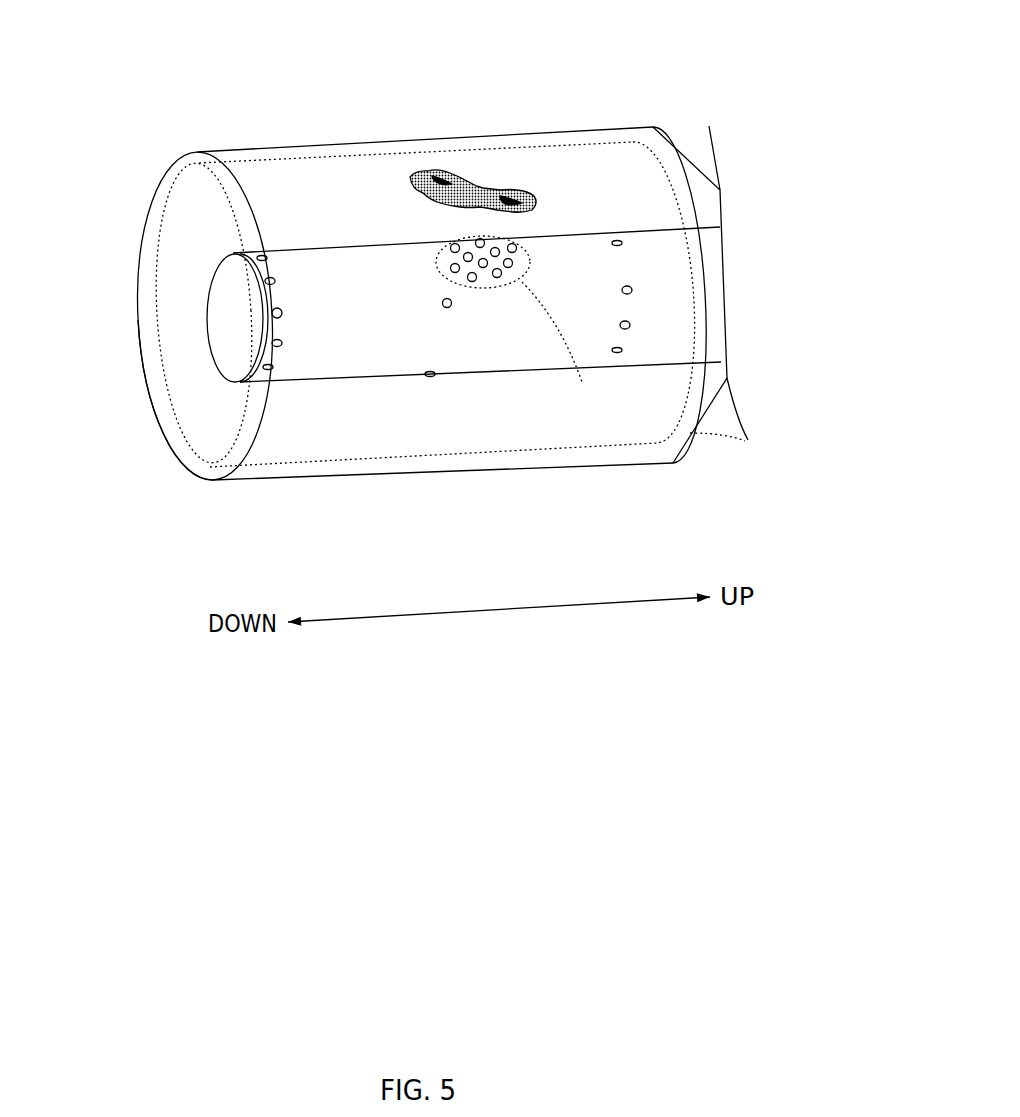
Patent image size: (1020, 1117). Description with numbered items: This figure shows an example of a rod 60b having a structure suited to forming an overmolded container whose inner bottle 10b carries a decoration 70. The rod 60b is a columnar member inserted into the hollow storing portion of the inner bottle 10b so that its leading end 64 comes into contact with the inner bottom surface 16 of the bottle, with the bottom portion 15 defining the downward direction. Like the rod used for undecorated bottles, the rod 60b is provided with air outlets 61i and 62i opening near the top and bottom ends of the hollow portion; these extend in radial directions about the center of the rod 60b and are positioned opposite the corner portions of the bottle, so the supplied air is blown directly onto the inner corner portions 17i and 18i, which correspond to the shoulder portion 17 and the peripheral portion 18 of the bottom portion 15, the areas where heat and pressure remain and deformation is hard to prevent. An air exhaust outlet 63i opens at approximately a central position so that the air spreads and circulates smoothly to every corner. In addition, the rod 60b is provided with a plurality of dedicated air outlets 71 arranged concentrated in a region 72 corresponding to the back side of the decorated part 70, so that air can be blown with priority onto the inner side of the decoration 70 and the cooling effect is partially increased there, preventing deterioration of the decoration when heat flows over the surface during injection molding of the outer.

The inner bottle 10b is at (592, 410).
The bottom portion 15 is at (182, 384).
The inner bottom surface 16 is at (236, 419).
The shoulder portion 17 is at (702, 172).
The corner portion 17i is at (745, 441).
The peripheral portion of bottom portion 18 is at (138, 237).
The corner portion 18i is at (170, 444).
The rod 60b is at (358, 349).
The air outlet 61i is at (618, 242).
The air outlet 62i is at (262, 255).
The air exhaust outlet 63i is at (430, 380).
The leading end 64 is at (220, 330).
The decoration 70 is at (470, 187).
The air outlets 71 is at (452, 248).
The region 72 is at (562, 345).